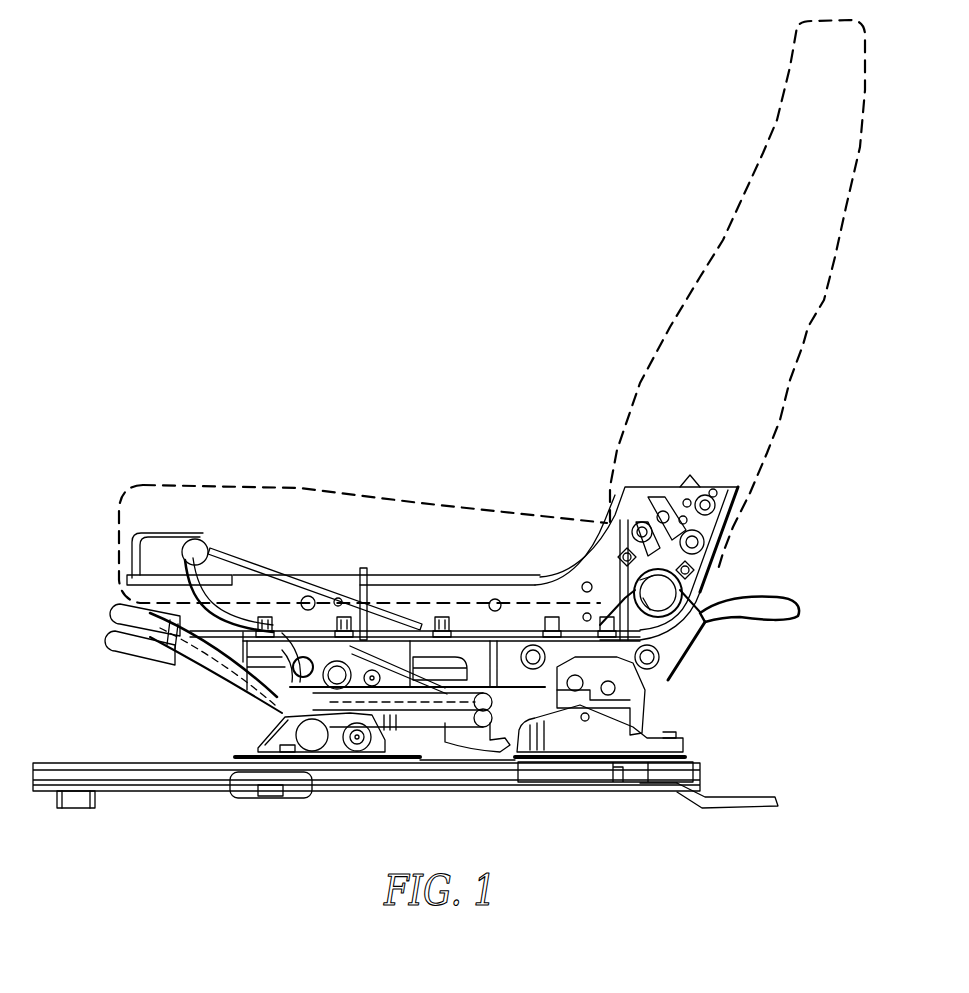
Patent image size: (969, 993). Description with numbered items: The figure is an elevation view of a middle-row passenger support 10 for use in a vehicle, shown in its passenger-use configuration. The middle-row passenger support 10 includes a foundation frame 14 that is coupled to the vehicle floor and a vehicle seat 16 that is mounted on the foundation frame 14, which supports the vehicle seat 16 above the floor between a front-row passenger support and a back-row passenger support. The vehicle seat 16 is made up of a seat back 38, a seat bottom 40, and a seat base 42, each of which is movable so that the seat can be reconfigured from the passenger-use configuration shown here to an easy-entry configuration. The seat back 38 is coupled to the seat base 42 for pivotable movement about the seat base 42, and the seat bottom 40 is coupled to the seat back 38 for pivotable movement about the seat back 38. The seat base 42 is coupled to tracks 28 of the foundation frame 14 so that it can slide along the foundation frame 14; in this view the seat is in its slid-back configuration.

The middle-row passenger support 10 is at (187, 158).
The foundation frame 14 is at (163, 793).
The vehicle seat 16 is at (840, 258).
The tracks 28 is at (42, 774).
The seat back 38 is at (782, 360).
The seat bottom 40 is at (312, 505).
The seat base 42 is at (700, 617).